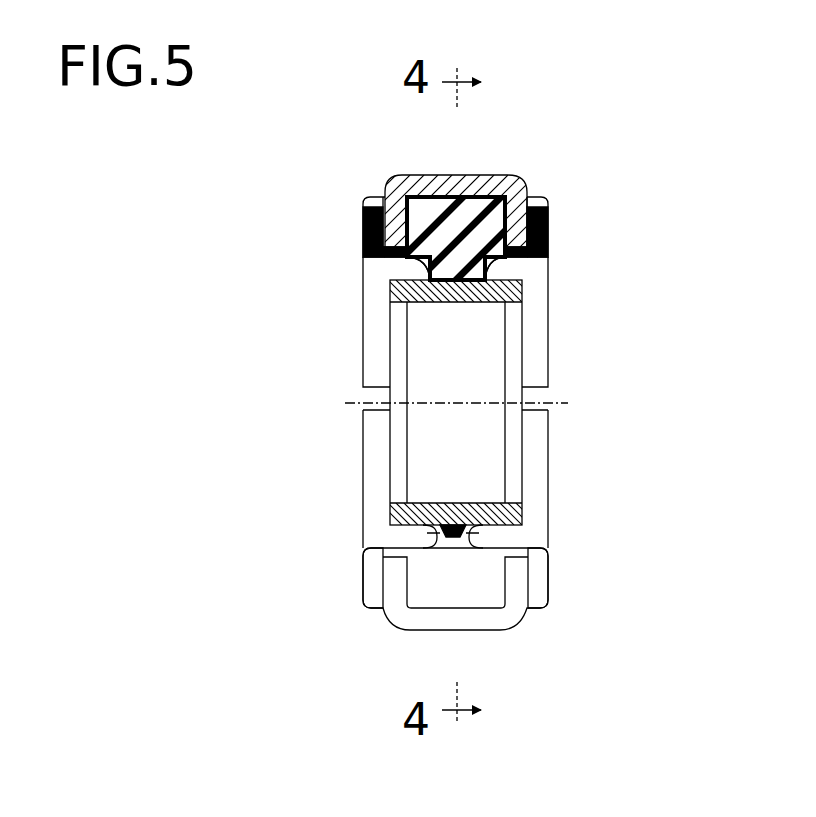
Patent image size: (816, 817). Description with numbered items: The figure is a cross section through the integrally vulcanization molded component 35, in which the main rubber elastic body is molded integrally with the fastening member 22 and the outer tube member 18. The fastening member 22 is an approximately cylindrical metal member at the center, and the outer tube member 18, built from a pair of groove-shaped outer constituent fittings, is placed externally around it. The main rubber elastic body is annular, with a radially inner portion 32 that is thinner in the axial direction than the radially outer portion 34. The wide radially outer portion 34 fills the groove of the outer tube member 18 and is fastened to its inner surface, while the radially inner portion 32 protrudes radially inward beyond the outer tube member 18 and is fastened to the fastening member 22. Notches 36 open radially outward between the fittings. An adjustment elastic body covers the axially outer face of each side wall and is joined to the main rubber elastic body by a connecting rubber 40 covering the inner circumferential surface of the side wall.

The outer tube member 18 is at (486, 650).
The fastening member 22 is at (413, 517).
The radially inner portion 32 is at (457, 268).
The radially outer portion 34 is at (469, 212).
The integrally vulcanization molded component 35 is at (602, 190).
The notch 36 is at (465, 553).
The connecting rubber 40 is at (393, 255).